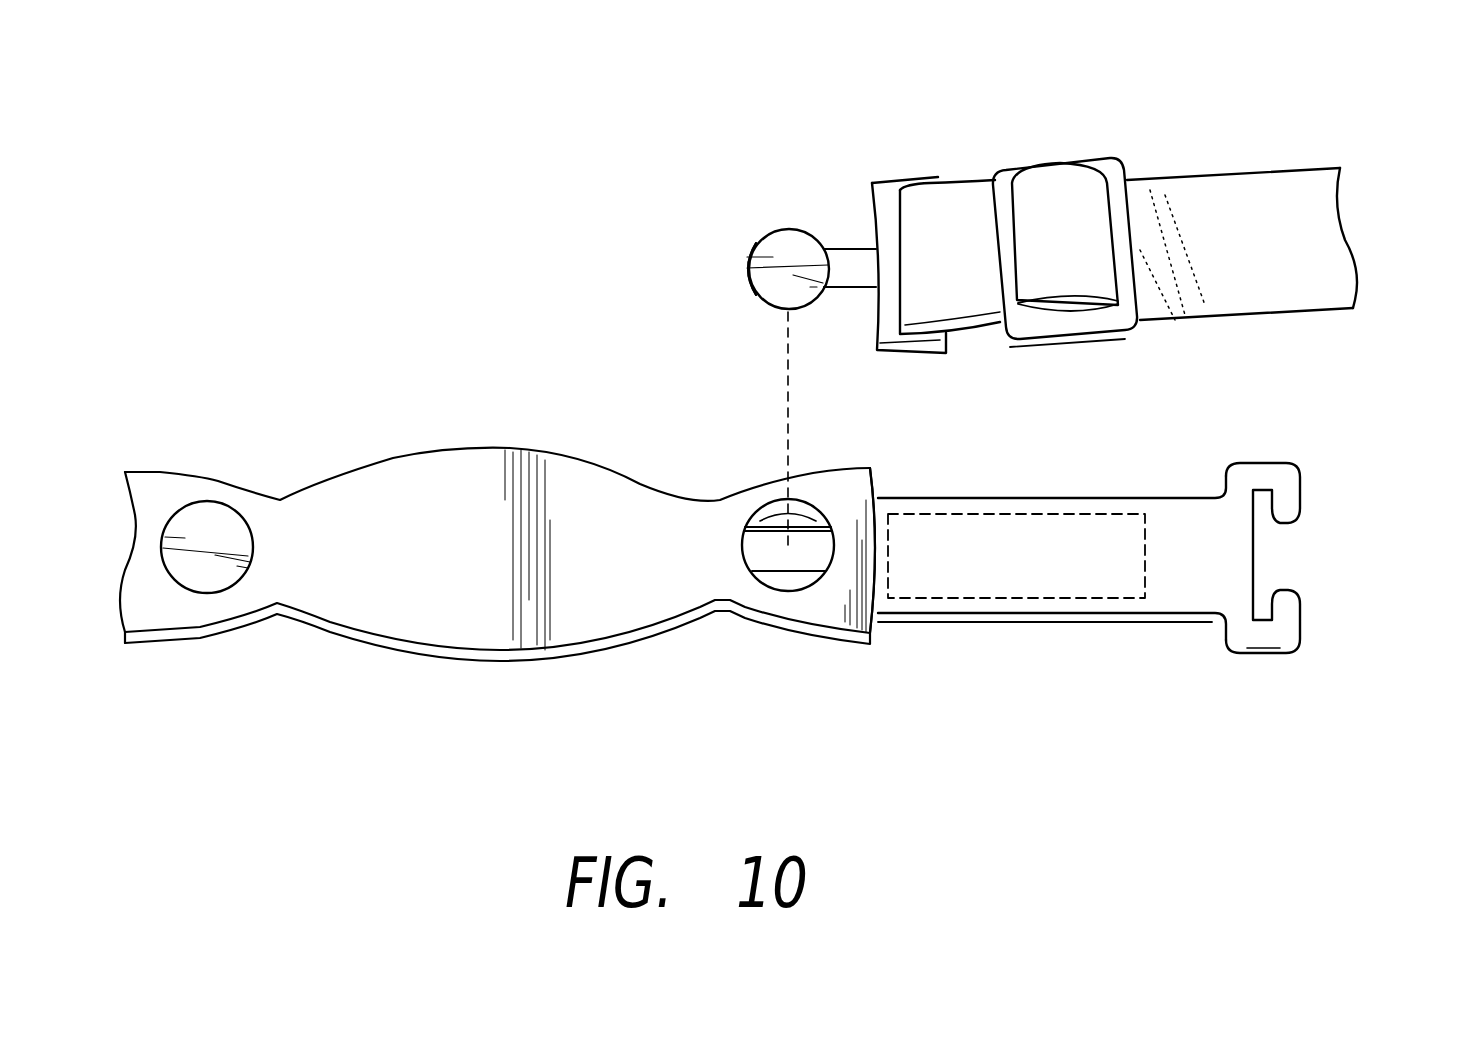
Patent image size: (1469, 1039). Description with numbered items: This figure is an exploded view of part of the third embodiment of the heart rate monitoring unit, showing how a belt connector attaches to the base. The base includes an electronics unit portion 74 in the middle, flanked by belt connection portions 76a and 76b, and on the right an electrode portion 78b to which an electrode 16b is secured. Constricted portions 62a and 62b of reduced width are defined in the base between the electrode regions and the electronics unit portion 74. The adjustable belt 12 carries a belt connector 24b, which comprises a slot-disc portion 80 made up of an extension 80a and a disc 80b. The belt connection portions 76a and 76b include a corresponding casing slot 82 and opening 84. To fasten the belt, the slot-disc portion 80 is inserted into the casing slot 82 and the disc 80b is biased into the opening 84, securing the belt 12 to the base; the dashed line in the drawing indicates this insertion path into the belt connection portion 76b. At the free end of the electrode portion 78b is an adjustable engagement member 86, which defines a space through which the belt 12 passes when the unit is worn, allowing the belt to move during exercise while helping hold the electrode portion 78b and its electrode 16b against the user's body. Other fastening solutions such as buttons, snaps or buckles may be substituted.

The belt 12 is at (1323, 245).
The electrode 16b is at (1035, 582).
The belt connector 24b is at (801, 177).
The constricted portion 62a is at (342, 574).
The constricted portion 62b is at (692, 574).
The electronics unit portion 74 is at (448, 483).
The belt connection portion 76a is at (170, 612).
The belt connection portion 76b is at (855, 618).
The electrode portion 78b is at (1045, 497).
The slot-disc portion 80 is at (216, 522).
The extension 80a is at (857, 272).
The disc 80b is at (765, 273).
The casing slot 82 is at (765, 556).
The opening 84 is at (783, 580).
The adjustable engagement member 86 is at (1300, 487).